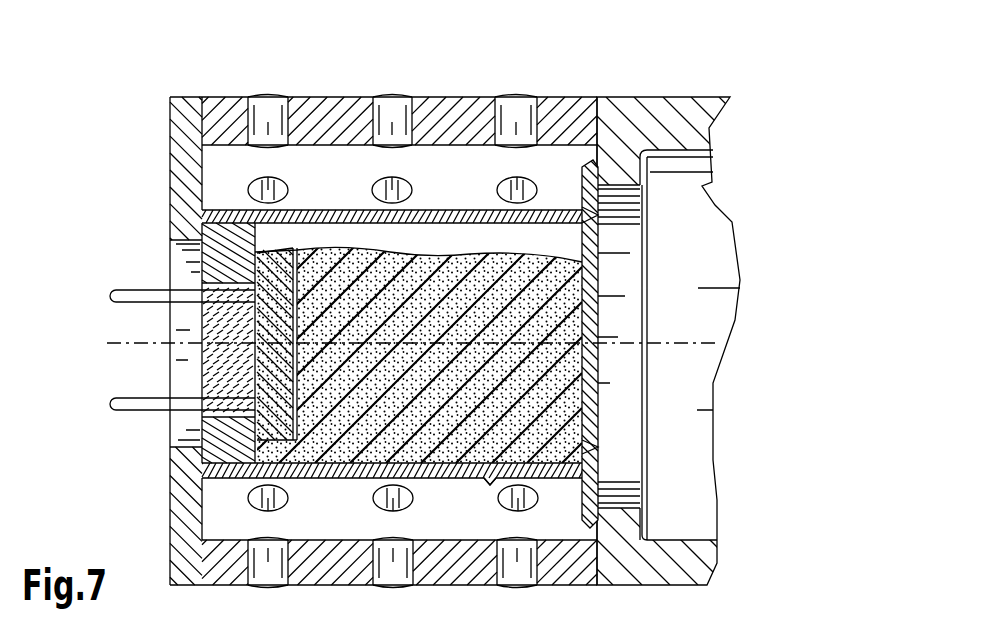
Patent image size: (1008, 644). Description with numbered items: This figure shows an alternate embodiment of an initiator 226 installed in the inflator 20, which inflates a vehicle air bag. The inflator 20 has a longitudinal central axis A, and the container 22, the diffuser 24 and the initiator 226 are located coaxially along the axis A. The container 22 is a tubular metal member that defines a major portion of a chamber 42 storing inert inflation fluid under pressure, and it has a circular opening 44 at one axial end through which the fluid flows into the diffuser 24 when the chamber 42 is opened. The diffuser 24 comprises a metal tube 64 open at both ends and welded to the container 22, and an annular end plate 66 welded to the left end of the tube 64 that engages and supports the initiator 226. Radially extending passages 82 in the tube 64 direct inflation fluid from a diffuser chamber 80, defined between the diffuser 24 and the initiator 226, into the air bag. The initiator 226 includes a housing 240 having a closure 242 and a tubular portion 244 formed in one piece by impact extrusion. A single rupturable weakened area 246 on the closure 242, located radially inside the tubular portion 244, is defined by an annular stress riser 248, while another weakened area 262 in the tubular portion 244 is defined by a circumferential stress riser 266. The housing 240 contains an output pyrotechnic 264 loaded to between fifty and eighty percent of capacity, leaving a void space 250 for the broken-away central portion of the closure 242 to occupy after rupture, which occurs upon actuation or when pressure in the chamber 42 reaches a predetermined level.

The inflator 20 is at (684, 323).
The container 22 is at (689, 96).
The diffuser 24 is at (237, 98).
The chamber 42 is at (703, 274).
The circular opening 44 is at (617, 498).
The metal tube 64 is at (340, 118).
The annular end plate 66 is at (190, 125).
The diffuser chamber 80 is at (335, 181).
The passages 82 is at (520, 120).
The initiator 226 is at (432, 198).
The initiator housing 240 is at (231, 206).
The closure 242 is at (592, 216).
The tubular portion 244 is at (230, 473).
The rupturable weakened area 246 is at (605, 451).
The annular stress riser 248 is at (600, 440).
The void space 250 is at (550, 243).
The weakened area 262 is at (483, 489).
The output pyrotechnic 264 is at (295, 282).
The circumferential stress riser 266 is at (487, 217).
The longitudinal central axis A is at (132, 343).